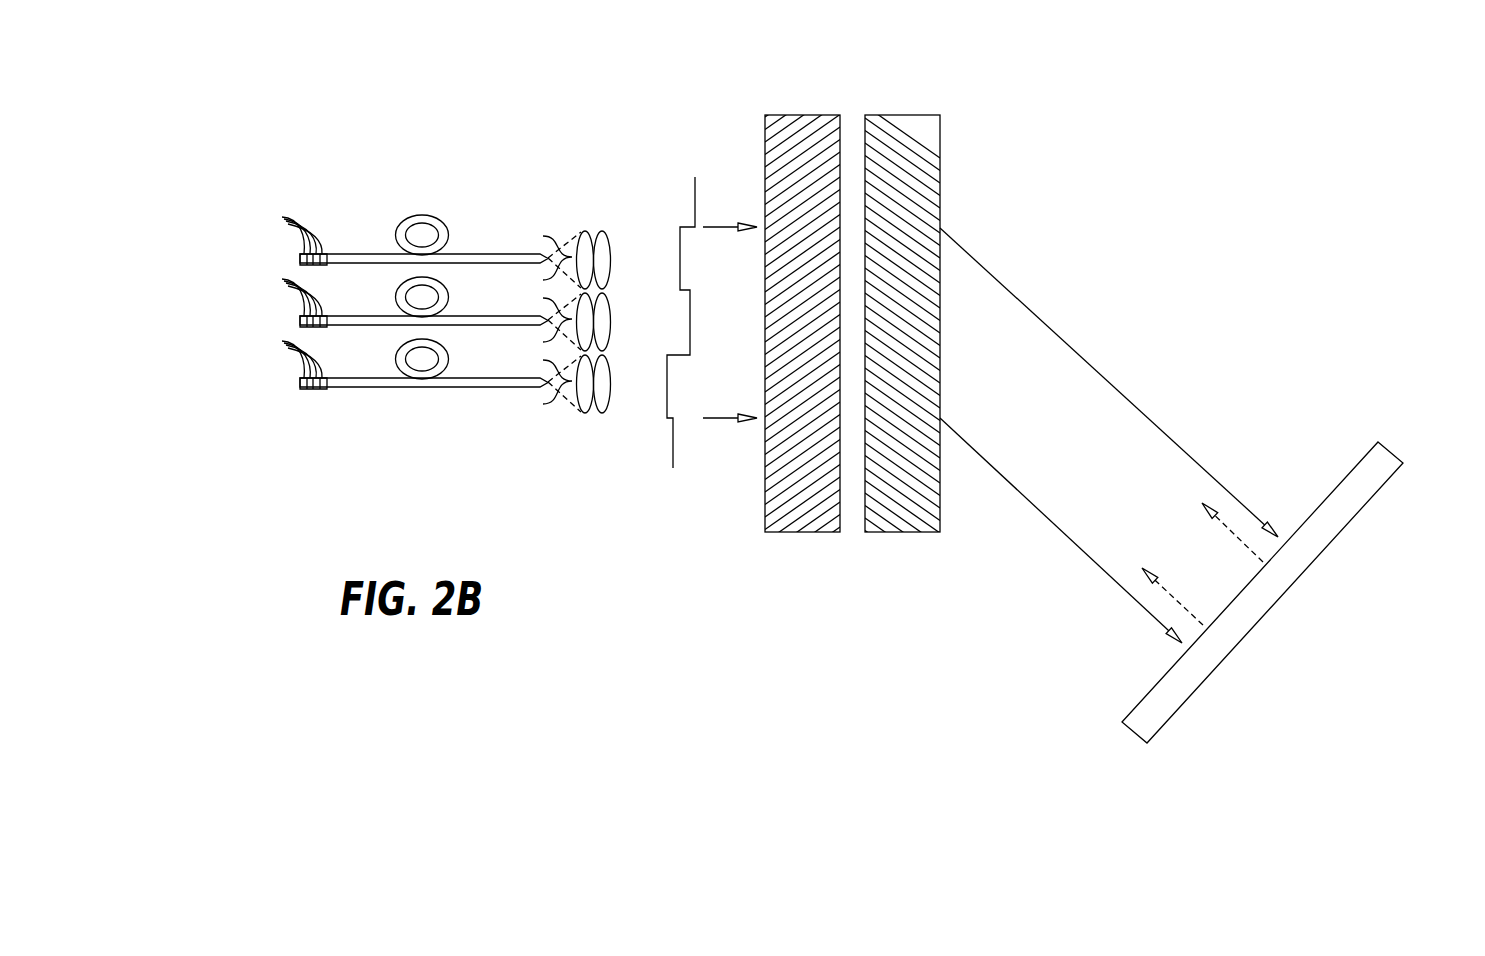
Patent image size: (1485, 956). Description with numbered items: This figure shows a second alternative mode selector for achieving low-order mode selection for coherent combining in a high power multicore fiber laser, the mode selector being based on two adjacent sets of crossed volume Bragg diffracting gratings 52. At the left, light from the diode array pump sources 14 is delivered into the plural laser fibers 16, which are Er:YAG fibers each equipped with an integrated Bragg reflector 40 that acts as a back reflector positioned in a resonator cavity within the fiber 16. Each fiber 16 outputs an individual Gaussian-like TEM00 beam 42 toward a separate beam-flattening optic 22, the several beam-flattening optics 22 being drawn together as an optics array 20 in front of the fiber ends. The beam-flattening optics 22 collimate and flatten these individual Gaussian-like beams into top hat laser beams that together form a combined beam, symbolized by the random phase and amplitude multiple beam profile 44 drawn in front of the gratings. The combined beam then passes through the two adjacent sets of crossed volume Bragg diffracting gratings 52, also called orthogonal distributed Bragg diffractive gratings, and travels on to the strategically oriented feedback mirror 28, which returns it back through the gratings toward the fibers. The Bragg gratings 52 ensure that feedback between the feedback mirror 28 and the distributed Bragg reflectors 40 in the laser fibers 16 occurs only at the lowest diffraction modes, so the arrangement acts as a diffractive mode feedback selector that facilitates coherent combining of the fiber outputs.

The diode array pump sources 14 is at (168, 313).
The laser fibers 16 is at (376, 240).
The lens array 20 is at (615, 259).
The beam-flattening optics 22 is at (602, 252).
The feedback mirror 28 is at (1392, 452).
The integrated Bragg reflectors 40 is at (282, 217).
The Gaussian-like TEM00 beams 42 is at (546, 236).
The random phase and amplitude multiple beam profile 44 is at (697, 197).
The crossed volume Bragg diffracting gratings 52 is at (804, 76).